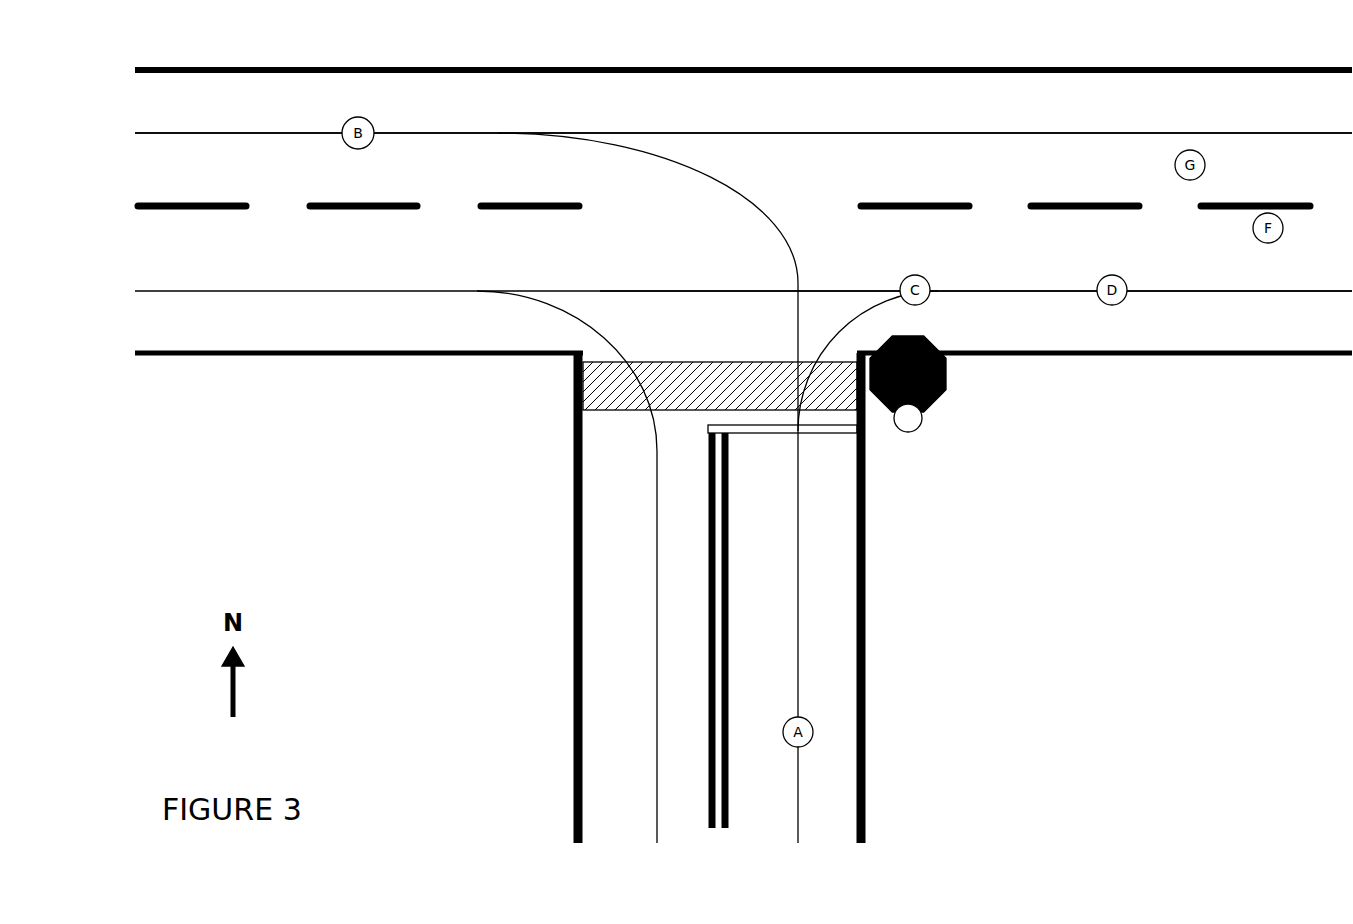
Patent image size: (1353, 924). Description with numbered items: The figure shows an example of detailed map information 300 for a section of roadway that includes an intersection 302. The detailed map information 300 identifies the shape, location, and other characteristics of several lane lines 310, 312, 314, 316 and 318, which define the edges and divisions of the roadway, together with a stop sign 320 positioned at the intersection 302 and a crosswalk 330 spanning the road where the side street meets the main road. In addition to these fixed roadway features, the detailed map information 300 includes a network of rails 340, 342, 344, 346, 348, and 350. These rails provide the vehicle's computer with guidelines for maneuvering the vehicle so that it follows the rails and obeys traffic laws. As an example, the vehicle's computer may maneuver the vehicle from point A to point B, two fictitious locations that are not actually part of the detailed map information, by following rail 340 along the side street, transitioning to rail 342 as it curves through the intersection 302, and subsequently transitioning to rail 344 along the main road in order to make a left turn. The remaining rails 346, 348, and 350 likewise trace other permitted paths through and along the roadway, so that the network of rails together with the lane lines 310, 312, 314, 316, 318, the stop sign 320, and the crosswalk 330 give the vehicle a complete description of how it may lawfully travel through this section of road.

The detailed map information 300 is at (251, 772).
The intersection 302 is at (718, 227).
The lane line 310 is at (866, 748).
The lane line 312 is at (573, 732).
The lane line 314 is at (708, 797).
The lane line 316 is at (600, 68).
The lane line 318 is at (1028, 204).
The stop sign 320 is at (948, 402).
The crosswalk 330 is at (580, 398).
The rail 340 is at (800, 607).
The rail 342 is at (697, 168).
The rail 344 is at (225, 134).
The rail 346 is at (866, 312).
The rail 348 is at (587, 318).
The rail 350 is at (1200, 292).